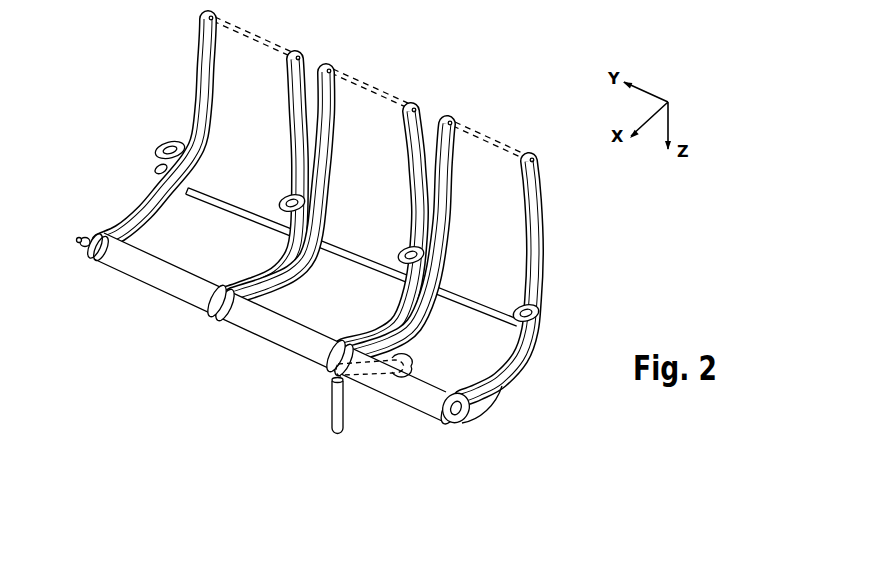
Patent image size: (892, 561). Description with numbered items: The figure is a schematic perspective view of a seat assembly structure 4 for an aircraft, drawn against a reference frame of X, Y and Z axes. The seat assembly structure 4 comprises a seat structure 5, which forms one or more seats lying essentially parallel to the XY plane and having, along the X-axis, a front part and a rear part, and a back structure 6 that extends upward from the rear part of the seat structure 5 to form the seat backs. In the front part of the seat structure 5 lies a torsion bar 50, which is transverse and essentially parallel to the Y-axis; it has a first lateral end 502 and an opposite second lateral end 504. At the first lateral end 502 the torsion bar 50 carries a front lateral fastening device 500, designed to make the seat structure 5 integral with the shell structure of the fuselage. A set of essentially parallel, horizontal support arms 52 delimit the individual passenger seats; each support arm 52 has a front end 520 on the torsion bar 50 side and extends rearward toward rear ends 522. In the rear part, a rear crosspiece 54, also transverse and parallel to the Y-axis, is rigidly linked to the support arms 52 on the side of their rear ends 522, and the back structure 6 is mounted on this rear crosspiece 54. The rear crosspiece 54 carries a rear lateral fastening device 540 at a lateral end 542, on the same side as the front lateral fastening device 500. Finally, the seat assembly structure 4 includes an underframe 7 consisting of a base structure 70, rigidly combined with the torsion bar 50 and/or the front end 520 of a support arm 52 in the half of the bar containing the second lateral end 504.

The seat assembly structure 4 is at (351, 211).
The seat structure 5 is at (530, 375).
The back structure 6 is at (480, 264).
The underframe 7 is at (337, 402).
The torsion bar 50 is at (272, 329).
The support arms 52 is at (485, 403).
The rear crosspiece 54 is at (222, 195).
The base structure 70 is at (333, 415).
The front lateral fastening device 500 is at (90, 236).
The first lateral end 502 is at (79, 253).
The second lateral end 504 is at (438, 414).
The front end 520 is at (465, 425).
The rear ends 522 is at (545, 322).
The rear lateral fastening device 540 is at (158, 158).
The lateral end 542 is at (153, 172).